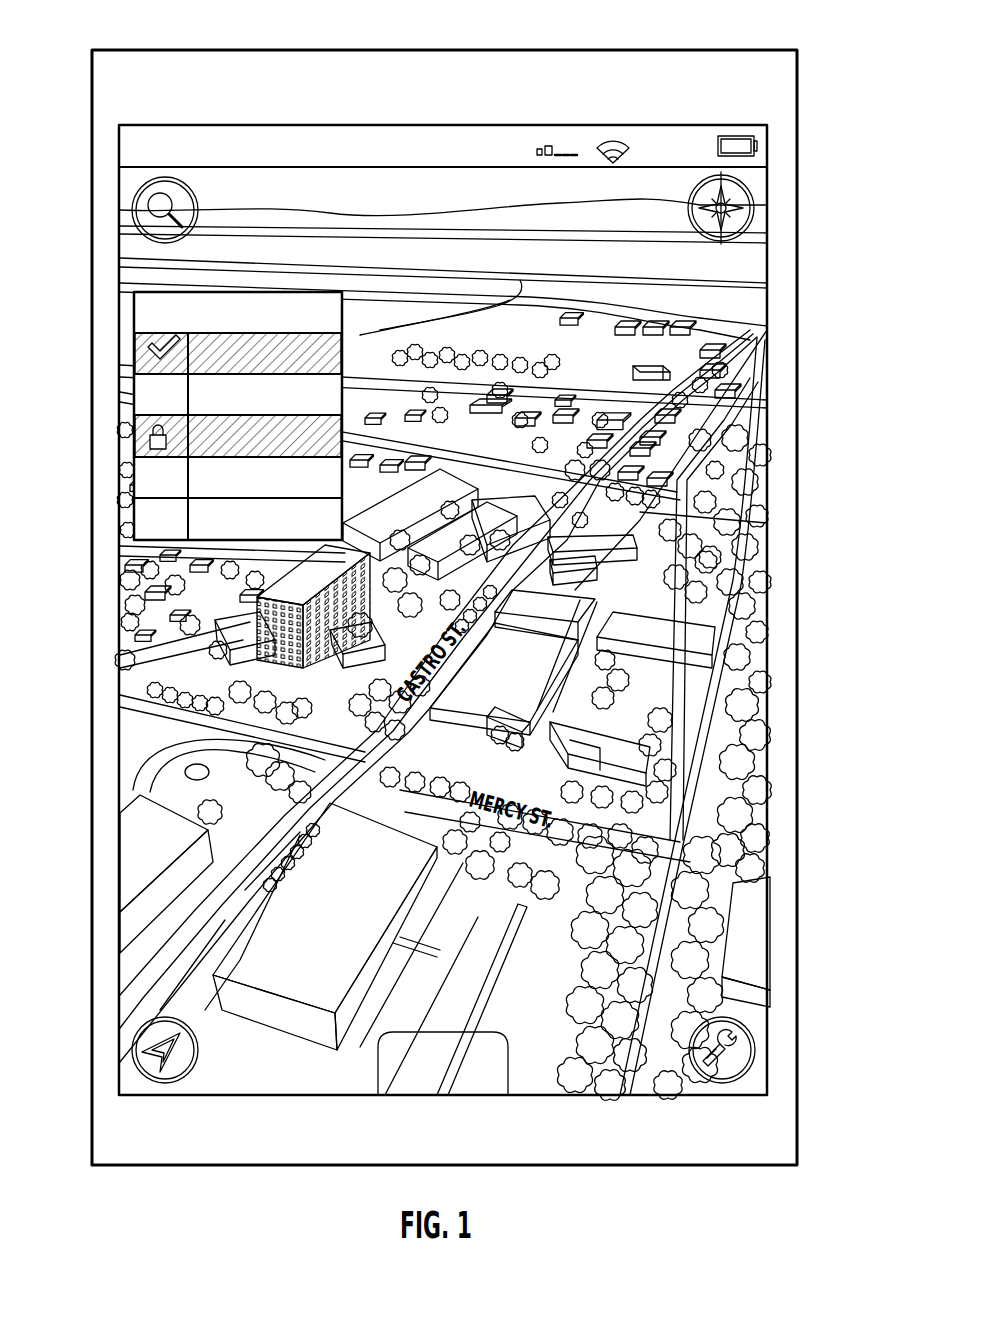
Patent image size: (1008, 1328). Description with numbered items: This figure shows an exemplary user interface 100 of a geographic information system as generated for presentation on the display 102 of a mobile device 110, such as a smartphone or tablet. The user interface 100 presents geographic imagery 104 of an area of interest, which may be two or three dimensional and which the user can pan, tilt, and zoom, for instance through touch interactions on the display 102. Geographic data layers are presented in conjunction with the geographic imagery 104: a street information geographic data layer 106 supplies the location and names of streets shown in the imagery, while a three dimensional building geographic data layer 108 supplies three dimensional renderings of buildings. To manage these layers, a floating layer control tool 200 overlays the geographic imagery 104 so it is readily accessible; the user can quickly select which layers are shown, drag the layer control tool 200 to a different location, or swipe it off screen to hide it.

The user interface 100 is at (768, 188).
The display 102 is at (748, 348).
The geographic imagery 104 is at (698, 637).
The street information geographic data layer 106 is at (682, 813).
The three dimensional building geographic data layer 108 is at (258, 608).
The mobile device 110 is at (608, 50).
The layer control tool 200 is at (137, 406).